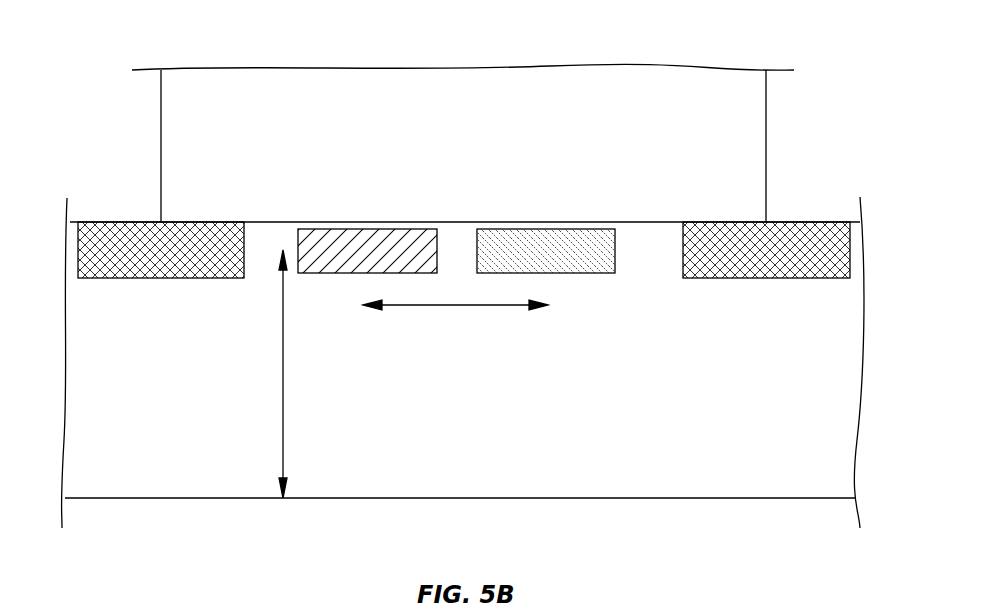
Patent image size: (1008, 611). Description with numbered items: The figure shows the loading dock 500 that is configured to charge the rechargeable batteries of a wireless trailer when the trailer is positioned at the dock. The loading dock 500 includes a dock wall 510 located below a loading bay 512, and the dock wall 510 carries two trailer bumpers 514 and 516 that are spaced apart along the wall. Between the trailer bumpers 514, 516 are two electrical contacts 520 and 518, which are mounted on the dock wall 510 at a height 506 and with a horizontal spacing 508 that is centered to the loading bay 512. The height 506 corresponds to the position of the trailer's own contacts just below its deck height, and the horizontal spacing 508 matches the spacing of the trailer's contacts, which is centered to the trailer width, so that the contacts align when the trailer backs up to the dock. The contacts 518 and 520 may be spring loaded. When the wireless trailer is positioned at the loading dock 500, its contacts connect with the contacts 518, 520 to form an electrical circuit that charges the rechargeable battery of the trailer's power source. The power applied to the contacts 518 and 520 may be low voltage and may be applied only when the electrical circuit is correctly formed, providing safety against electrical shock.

The loading dock 500 is at (845, 70).
The loading bay 512 is at (192, 147).
The dock wall 510 is at (85, 408).
The trailer bumper 514 is at (175, 278).
The trailer bumper 516 is at (777, 278).
The contact 520 is at (328, 273).
The contact 518 is at (604, 273).
The height 506 is at (283, 366).
The horizontal spacing 508 is at (460, 305).